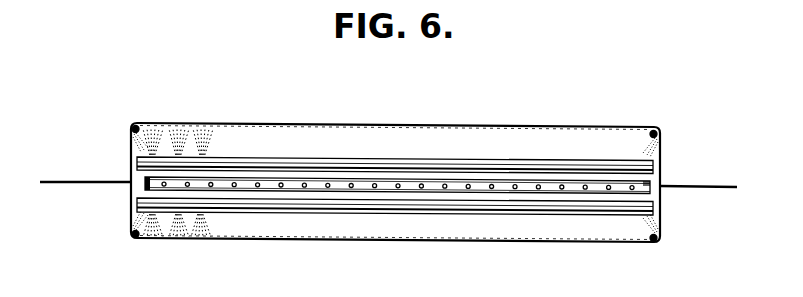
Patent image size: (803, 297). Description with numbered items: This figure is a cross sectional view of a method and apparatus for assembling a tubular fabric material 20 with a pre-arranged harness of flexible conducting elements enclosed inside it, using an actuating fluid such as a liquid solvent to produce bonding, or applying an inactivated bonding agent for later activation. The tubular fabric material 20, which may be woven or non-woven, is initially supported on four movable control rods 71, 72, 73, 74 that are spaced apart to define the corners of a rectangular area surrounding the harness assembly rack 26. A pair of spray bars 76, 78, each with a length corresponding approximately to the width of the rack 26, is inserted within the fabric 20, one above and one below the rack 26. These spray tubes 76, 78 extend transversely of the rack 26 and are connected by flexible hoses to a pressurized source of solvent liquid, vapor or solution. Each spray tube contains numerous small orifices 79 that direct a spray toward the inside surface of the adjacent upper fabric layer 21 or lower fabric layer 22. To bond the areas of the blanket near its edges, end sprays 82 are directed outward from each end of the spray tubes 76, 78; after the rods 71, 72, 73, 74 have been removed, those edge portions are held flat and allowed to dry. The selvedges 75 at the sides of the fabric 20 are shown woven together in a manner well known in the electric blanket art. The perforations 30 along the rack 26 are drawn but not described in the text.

The tubular fabric material 20 is at (620, 123).
The fabric layer 21 is at (240, 123).
The fabric layer 22 is at (270, 243).
The harness assembly rack 26 is at (653, 190).
The perforations 30 is at (467, 184).
The movable control rod 71 is at (137, 125).
The movable control rod 72 is at (659, 134).
The movable control rod 73 is at (133, 238).
The movable control rod 74 is at (659, 237).
The selvedges 75 is at (83, 184).
The spray bar 76 is at (148, 156).
The spray bar 78 is at (140, 218).
The small orifices 79 is at (203, 156).
The end sprays 82 is at (131, 140).